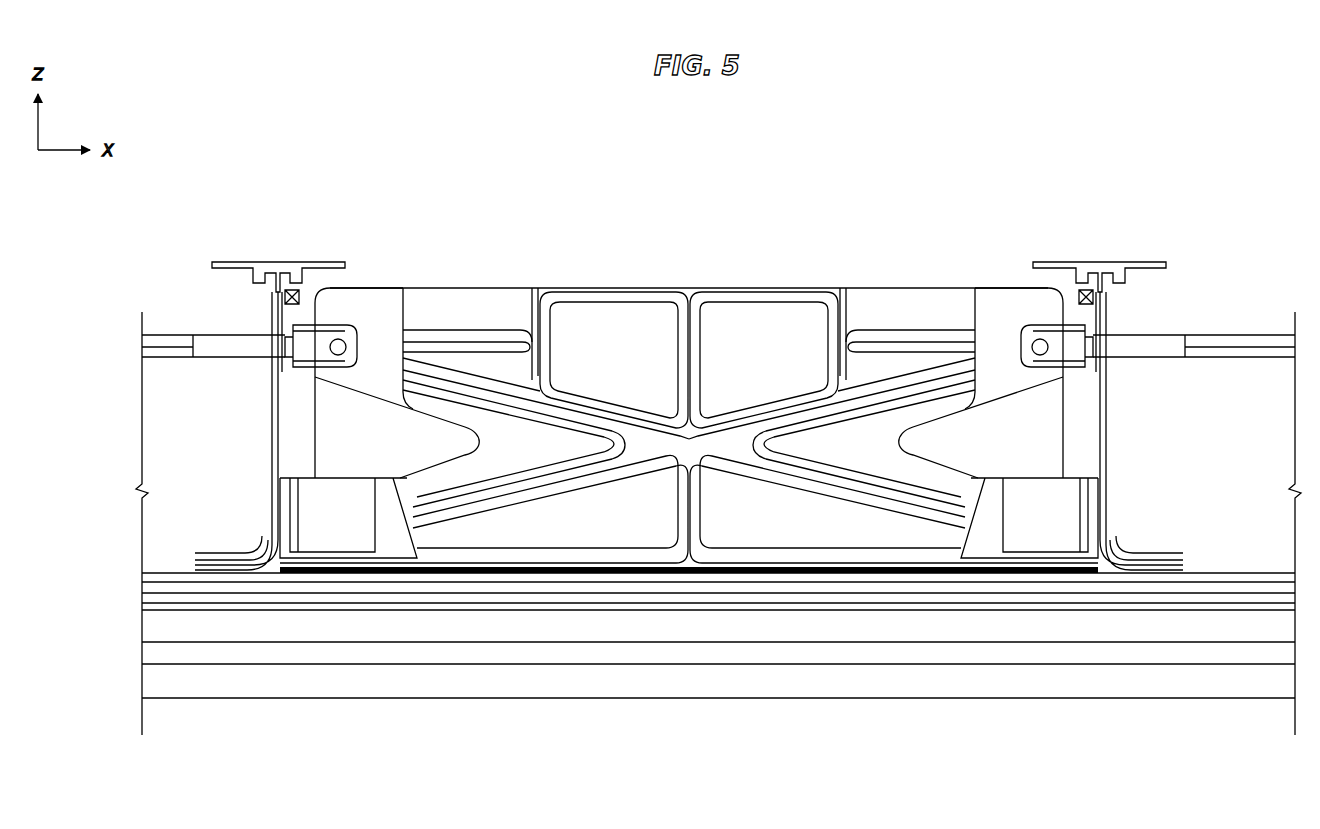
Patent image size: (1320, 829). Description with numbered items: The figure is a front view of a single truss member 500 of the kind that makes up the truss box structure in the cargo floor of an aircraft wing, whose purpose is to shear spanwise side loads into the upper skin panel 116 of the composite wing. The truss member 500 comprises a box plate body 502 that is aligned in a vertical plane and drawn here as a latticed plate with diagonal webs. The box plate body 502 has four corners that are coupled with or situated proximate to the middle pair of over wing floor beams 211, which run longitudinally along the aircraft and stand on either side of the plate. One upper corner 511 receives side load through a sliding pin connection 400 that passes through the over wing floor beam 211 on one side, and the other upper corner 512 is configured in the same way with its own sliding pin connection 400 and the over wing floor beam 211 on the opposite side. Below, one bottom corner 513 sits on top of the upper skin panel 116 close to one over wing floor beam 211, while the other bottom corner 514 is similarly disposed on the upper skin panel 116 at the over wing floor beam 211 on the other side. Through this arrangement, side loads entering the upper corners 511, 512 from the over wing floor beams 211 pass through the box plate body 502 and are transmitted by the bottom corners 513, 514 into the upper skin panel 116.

The upper skin panel 116 is at (698, 680).
The over wing floor beam 211 is at (245, 252).
The sliding pin connection 400 is at (303, 365).
The truss member 500 is at (515, 160).
The box plate body 502 is at (536, 275).
The upper corner 511 is at (357, 297).
The upper corner 512 is at (1006, 297).
The bottom corner 513 is at (310, 524).
The bottom corner 514 is at (1066, 525).